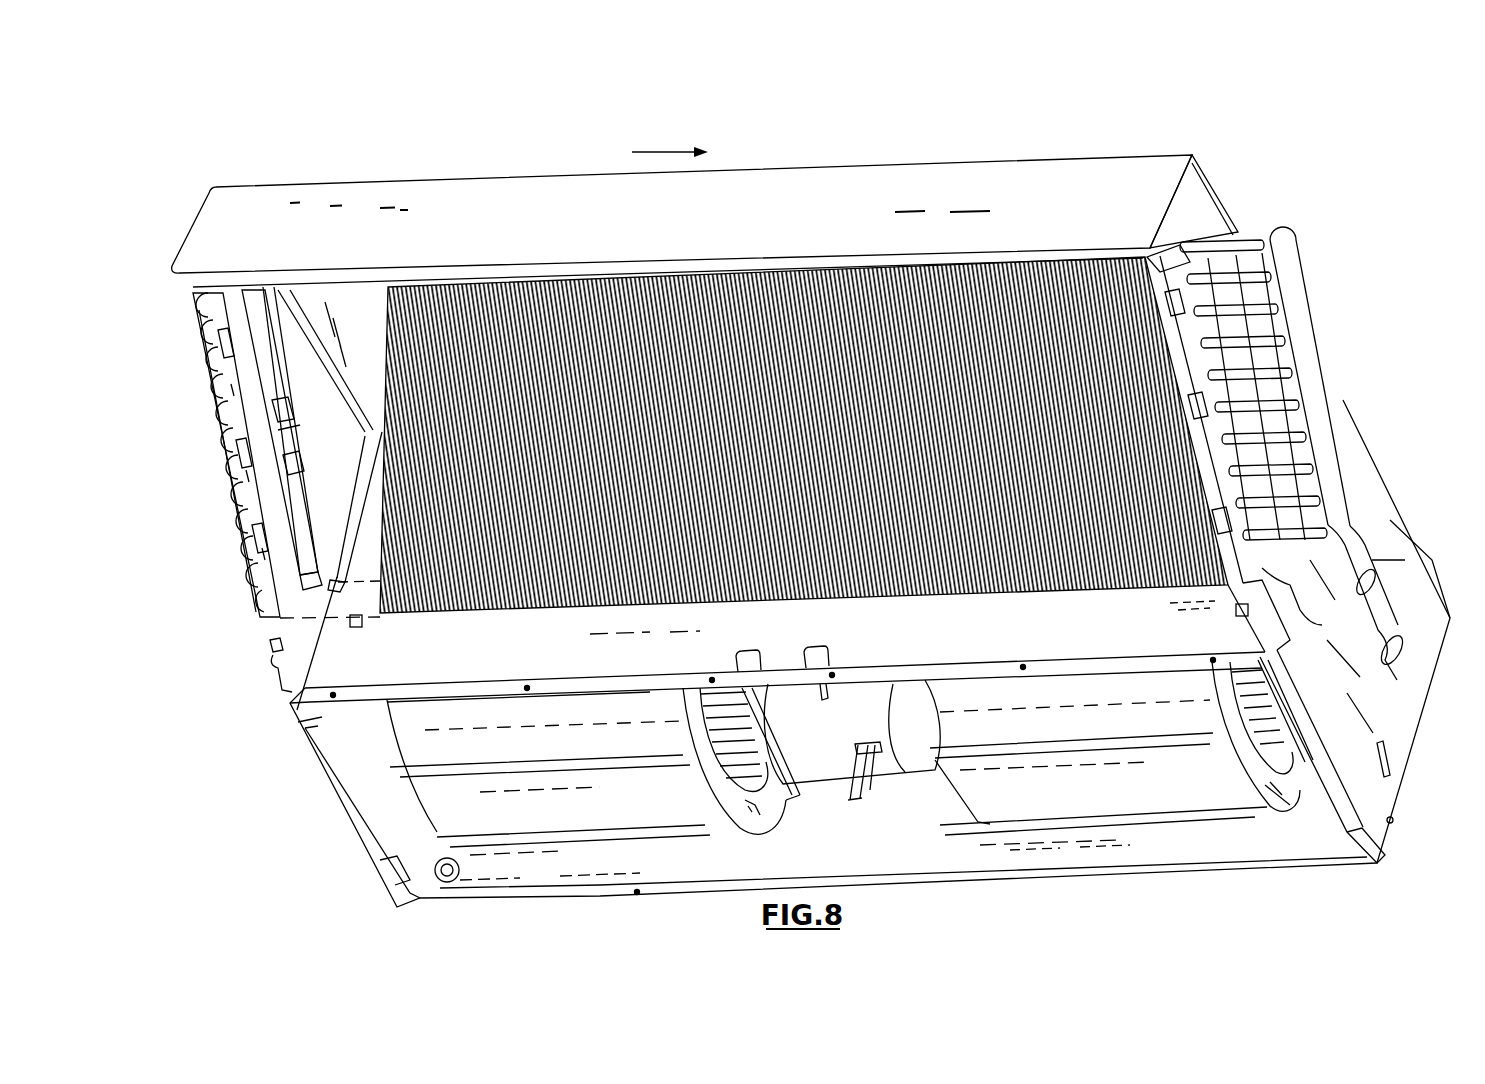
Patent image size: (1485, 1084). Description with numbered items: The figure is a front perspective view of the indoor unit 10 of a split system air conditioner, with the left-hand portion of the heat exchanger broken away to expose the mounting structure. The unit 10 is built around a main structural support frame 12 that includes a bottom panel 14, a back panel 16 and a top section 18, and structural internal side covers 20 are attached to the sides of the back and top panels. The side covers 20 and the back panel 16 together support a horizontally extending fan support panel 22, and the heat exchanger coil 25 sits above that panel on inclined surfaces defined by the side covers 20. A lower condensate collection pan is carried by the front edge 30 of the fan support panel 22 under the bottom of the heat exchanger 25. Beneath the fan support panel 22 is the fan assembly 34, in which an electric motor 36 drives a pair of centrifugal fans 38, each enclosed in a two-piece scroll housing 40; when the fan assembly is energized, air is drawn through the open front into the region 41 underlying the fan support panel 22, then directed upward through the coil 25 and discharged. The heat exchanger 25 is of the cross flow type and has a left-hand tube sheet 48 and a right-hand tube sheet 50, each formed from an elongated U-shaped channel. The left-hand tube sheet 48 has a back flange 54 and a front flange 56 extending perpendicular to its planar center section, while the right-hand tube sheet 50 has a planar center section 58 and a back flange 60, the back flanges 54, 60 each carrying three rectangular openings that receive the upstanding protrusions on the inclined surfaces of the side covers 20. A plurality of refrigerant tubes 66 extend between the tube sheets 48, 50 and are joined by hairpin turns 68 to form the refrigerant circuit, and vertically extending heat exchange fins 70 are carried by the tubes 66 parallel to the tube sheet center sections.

The indoor unit 10 is at (815, 140).
The main structural support frame 12 is at (1246, 207).
The bottom panel 14 is at (1142, 877).
The back panel 16 is at (1234, 200).
The top section 18 is at (711, 230).
The structural internal side covers 20 is at (1398, 727).
The fan support panel 22 is at (1119, 636).
The heat exchanger coil 25 is at (533, 631).
The front edge 30 is at (447, 693).
The fan assembly 34 is at (884, 862).
The electric motor 36 is at (834, 741).
The centrifugal fans 38 is at (762, 752).
The scroll housing 40 is at (571, 814).
The region 41 is at (927, 842).
The left-hand tube sheet 48 is at (252, 614).
The right-hand tube sheet 50 is at (1250, 226).
The back flange 54 is at (315, 430).
The front flange 56 is at (268, 630).
The planar center section 58 is at (1152, 242).
The back flange 60 is at (1197, 207).
The refrigerant tubes 66 is at (1272, 345).
The hairpin turns 68 is at (212, 470).
The heat exchange fins 70 is at (790, 605).